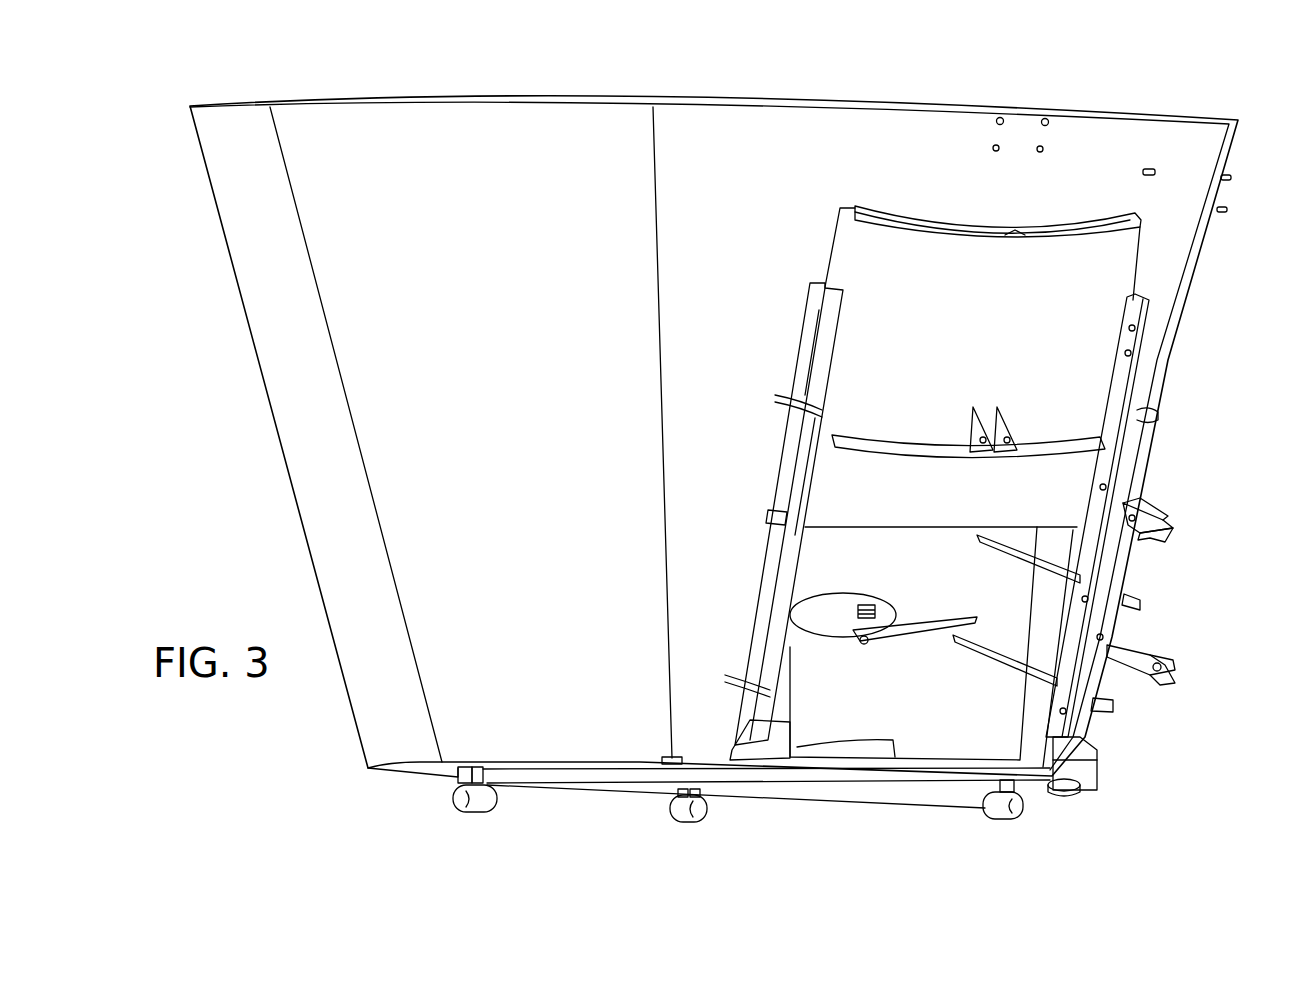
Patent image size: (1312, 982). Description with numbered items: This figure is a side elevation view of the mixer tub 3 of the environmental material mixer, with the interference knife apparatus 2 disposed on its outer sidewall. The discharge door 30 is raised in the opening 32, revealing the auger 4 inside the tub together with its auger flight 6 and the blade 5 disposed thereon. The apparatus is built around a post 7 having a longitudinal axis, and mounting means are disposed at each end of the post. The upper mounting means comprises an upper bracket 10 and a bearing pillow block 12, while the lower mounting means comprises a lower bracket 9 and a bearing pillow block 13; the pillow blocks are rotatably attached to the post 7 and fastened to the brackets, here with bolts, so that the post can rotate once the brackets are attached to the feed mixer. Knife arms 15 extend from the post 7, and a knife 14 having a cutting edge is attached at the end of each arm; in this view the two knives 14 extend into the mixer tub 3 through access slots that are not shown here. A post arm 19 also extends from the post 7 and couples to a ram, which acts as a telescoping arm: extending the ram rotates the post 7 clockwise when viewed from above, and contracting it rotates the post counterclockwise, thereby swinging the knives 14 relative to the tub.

The mixing container 2 is at (268, 490).
The mixer tub 3 is at (583, 135).
The auger 4 is at (782, 712).
The blade 5 is at (913, 623).
The auger flight 6 is at (822, 623).
The post 7 is at (1095, 727).
The lower bracket 9 is at (1080, 760).
The upper bracket 10 is at (1147, 537).
The bearing pillow block 12 is at (1170, 512).
The bearing pillow block 13 is at (1083, 787).
The knife 14 is at (1012, 560).
The knife arm 15 is at (1140, 603).
The post arm 19 is at (1143, 647).
The discharge door 30 is at (1105, 263).
The opening 32 is at (837, 555).